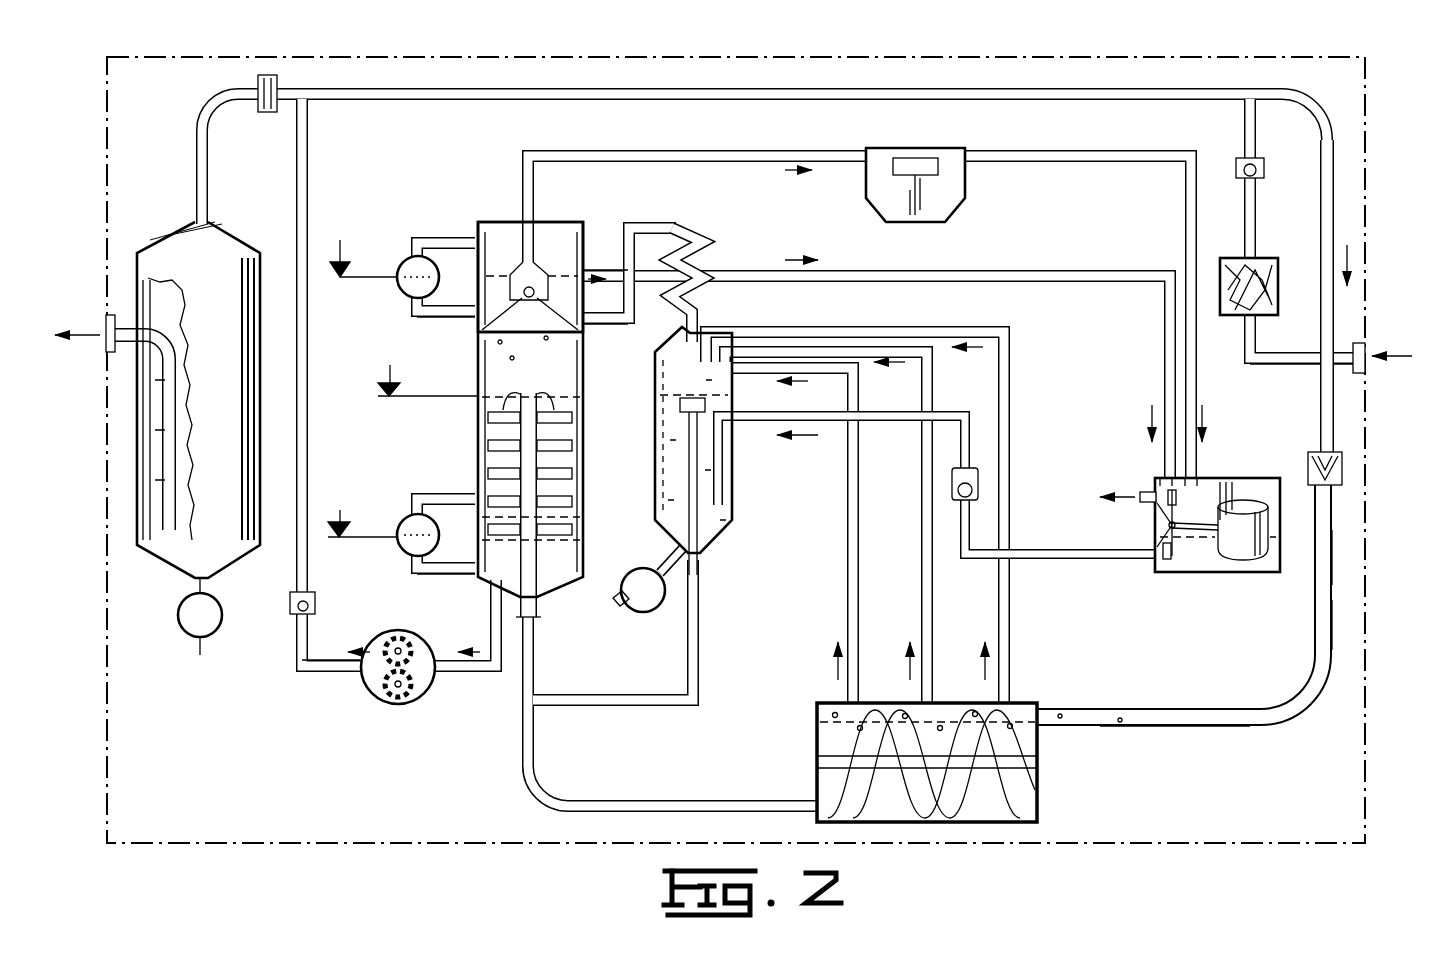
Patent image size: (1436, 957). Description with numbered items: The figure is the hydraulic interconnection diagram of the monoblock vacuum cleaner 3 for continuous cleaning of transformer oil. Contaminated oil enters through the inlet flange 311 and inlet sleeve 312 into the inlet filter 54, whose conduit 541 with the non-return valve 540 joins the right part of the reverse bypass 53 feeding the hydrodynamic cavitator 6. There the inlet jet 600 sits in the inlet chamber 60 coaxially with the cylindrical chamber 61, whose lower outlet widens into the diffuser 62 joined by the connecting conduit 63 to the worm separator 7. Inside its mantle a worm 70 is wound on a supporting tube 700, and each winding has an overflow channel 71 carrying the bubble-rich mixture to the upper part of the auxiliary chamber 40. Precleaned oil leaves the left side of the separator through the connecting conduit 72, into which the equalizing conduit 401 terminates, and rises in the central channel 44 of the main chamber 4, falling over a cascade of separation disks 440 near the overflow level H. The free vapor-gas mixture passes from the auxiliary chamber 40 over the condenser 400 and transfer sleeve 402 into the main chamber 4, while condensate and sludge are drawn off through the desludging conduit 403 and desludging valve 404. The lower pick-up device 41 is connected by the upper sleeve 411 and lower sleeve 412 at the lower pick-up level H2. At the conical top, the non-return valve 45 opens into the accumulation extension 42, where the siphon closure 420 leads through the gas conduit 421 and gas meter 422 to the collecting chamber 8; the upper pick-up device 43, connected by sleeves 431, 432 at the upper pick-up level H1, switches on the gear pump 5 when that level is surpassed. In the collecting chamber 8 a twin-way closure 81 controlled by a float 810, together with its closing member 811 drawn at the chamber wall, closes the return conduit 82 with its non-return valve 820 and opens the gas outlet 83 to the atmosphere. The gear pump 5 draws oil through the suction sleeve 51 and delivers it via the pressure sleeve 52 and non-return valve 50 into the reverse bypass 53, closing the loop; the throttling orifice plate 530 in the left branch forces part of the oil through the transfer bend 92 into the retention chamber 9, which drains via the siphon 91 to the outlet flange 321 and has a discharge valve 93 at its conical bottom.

The vacuum cleaner 3 is at (388, 846).
The main chamber 4 is at (472, 372).
The auxiliary chamber 40 is at (655, 432).
The condenser 400 is at (708, 258).
The equalizing conduit 401 is at (688, 492).
The transfer sleeve 402 is at (616, 325).
The desludging conduit 403 is at (663, 545).
The desludging valve 404 is at (648, 612).
The lower pick-up device 41 is at (398, 548).
The upper sleeve 411 is at (452, 492).
The lower sleeve 412 is at (462, 578).
The accumulation extension 42 is at (510, 215).
The siphon closure 420 is at (545, 258).
The gas conduit 421 is at (655, 150).
The gas meter 422 is at (966, 185).
The upper pick-up device 43 is at (404, 262).
The upper sleeve 431 is at (462, 238).
The lower sleeve 432 is at (428, 320).
The central channel 44 is at (540, 590).
The separation disks 440 is at (480, 440).
The non-return valve 45 is at (529, 300).
The gear pump 5 is at (390, 706).
The non-return valve 50 is at (288, 600).
The suction sleeve 51 is at (455, 676).
The pressure sleeve 52 is at (318, 675).
The reverse bypass 53 is at (308, 165).
The throttling orifice plate 530 is at (268, 112).
The inlet filter 54 is at (1278, 272).
The non-return valve 540 is at (1236, 165).
The conduit of the inlet filter 541 is at (1258, 143).
The hydrodynamic cavitator 6 is at (1340, 530).
The inlet chamber 60 is at (1308, 460).
The inlet jet 600 is at (1340, 466).
The cylindrical chamber 61 is at (1333, 553).
The diffuser 62 is at (1334, 628).
The connecting conduit 63 is at (1202, 732).
The worm separator 7 is at (816, 755).
The worm 70 is at (1036, 792).
The supporting tube 700 is at (1010, 743).
The overflow channels 71 is at (857, 607).
The connecting conduit 72 is at (637, 798).
The collecting chamber 8 is at (1240, 474).
The twin-way closure 81 is at (1190, 538).
The float 810 is at (1250, 562).
The valve 811 is at (1172, 575).
The return conduit 82 is at (962, 442).
The non-return valve 820 is at (980, 482).
The gas outlet 83 is at (1143, 505).
The retention chamber 9 is at (170, 228).
The siphon 91 is at (186, 492).
The transfer bend 92 is at (198, 128).
The discharge valve 93 is at (180, 625).
The inlet flange 311 is at (1365, 372).
The inlet sleeve 312 is at (1280, 352).
The outlet flange 321 is at (108, 320).
The overflow level H is at (382, 388).
The upper pick-up level H1 is at (338, 256).
The lower pick-up level H2 is at (342, 526).